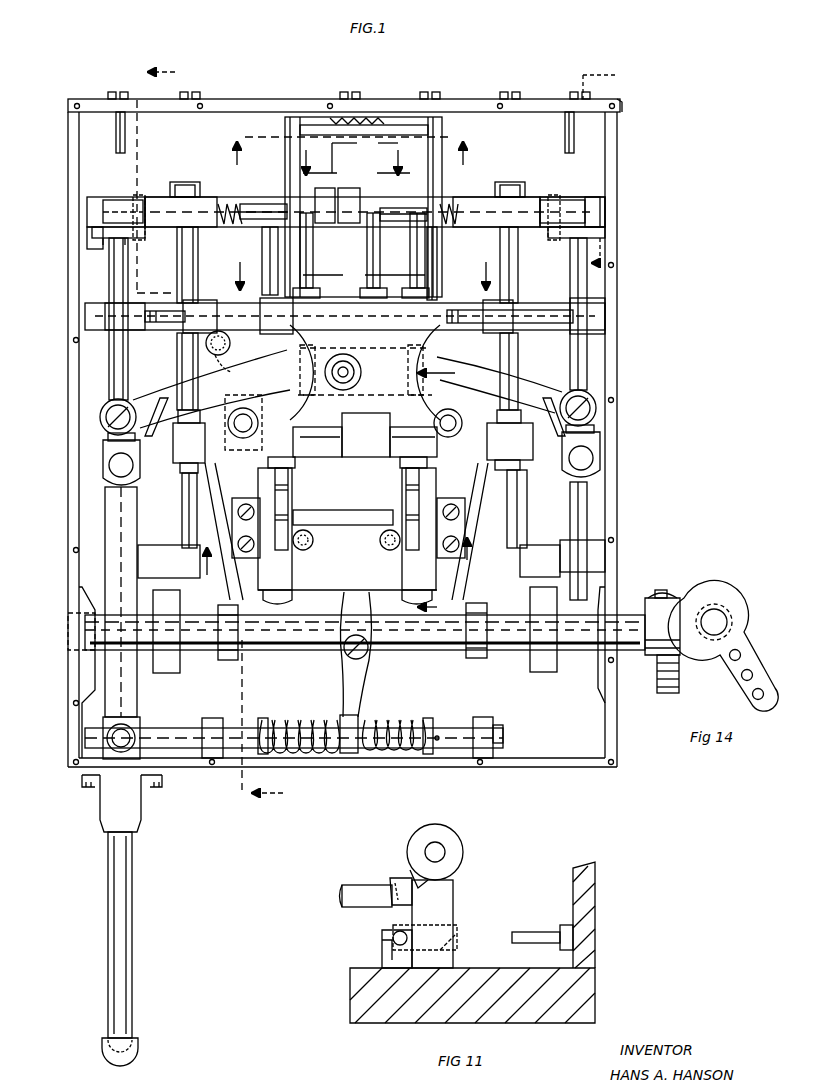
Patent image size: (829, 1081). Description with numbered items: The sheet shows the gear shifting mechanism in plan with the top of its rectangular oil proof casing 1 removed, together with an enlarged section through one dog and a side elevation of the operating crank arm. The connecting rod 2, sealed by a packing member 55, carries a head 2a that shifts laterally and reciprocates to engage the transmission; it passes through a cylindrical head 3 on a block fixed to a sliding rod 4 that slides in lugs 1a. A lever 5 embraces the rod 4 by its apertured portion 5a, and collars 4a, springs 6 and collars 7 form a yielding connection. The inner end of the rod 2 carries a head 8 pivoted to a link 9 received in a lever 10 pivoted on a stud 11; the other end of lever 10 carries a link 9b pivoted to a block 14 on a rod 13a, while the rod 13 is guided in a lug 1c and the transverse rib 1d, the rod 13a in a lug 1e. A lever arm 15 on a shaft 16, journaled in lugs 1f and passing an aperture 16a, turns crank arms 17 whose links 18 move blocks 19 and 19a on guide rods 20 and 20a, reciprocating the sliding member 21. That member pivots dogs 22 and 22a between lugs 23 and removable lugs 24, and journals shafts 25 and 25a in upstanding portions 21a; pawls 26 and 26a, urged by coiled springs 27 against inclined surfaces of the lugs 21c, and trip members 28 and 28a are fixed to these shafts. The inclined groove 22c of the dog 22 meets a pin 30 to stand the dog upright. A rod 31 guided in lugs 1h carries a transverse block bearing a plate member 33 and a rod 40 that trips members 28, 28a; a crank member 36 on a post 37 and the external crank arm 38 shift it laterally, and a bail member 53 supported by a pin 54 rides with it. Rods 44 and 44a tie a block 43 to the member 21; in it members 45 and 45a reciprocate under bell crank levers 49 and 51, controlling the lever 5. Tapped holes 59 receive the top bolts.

In FIG. 1, the casing 1 is at (620, 276).
In FIG. 1, the lugs 1a is at (212, 720).
In FIG. 1, the lug 1c is at (144, 560).
In FIG. 1, the transverse rib 1d is at (88, 325).
In FIG. 1, the lug 1e is at (540, 550).
In FIG. 1, the lugs 1f is at (168, 668).
In FIG. 1, the lugs 1h is at (205, 310).
In FIG. 1, the connecting rod 2 is at (122, 960).
In FIG. 1, the head 2a is at (140, 1055).
In FIG. 1, the cylindrical head 3 is at (136, 728).
In FIG. 1, the sliding rod 4 is at (168, 735).
In FIG. 1, the collars 4a is at (345, 722).
In FIG. 1, the lever 5 is at (347, 690).
In FIG. 1, the upstanding apertured portion 5a is at (350, 755).
In FIG. 1, the springs 6 is at (420, 724).
In FIG. 1, the collars 7 is at (263, 720).
In FIG. 1, the head 8 is at (112, 505).
In FIG. 1, the link 9 is at (108, 436).
In FIG. 1, the link 9b is at (585, 432).
In FIG. 1, the lever 10 is at (355, 349).
In FIG. 1, the shouldered stud 11 is at (358, 432).
In FIG. 1, the rod 13 is at (110, 350).
In FIG. 1, the rod 13a is at (580, 520).
In FIG. 1, the block 14 is at (598, 443).
In FIG. 1, the lever arm 15 is at (660, 680).
In FIG. 1, the shaft 16 is at (641, 605).
In FIG. 1, the aperture 16a is at (85, 632).
In FIG. 1, the crank arms 17 is at (240, 656).
In FIG. 1, the links 18 is at (214, 494).
In FIG. 1, the block 19 is at (533, 442).
In FIG. 1, the block 19a is at (176, 447).
In FIG. 1, the guide rod 20 is at (527, 485).
In FIG. 1, the guide rod 20a is at (182, 488).
In FIG. 1, the sliding member 21 is at (240, 197).
In FIG. 1, the upstanding portions 21a is at (158, 197).
In FIG. 1, the lugs 21c is at (605, 205).
In FIG. 1, the dog 22 is at (112, 240).
In FIG. 11, the dog 22 is at (400, 912).
In FIG. 1, the dog 22a is at (605, 232).
In FIG. 11, the inclined groove 22c is at (390, 884).
In FIG. 1, the lugs 23 is at (95, 242).
In FIG. 11, the lugs 23 is at (392, 945).
In FIG. 1, the removable lugs 24 is at (143, 235).
In FIG. 1, the shaft 25 is at (255, 204).
In FIG. 1, the shaft 25a is at (388, 208).
In FIG. 1, the pawl member 26 is at (117, 200).
In FIG. 11, the pawl member 26 is at (455, 847).
In FIG. 1, the pawl member 26a is at (545, 200).
In FIG. 1, the coiled springs 27 is at (226, 202).
In FIG. 1, the trip member 28 is at (316, 201).
In FIG. 1, the trip member 28a is at (348, 197).
In FIG. 1, the pin 30 is at (125, 146).
In FIG. 11, the pin 30 is at (520, 930).
In FIG. 1, the rod 31 is at (545, 324).
In FIG. 1, the plate member 33 is at (455, 412).
In FIG. 1, the crank member 36 is at (228, 351).
In FIG. 1, the post 37 is at (243, 438).
In FIG. 1, the crank arm 38 is at (215, 368).
In FIG. 1, the rod 40 is at (313, 240).
In FIG. 1, the block 43 is at (322, 588).
In FIG. 1, the rod 44 is at (264, 250).
In FIG. 1, the rod 44a is at (437, 248).
In FIG. 1, the member 45 is at (306, 549).
In FIG. 1, the member 45a is at (388, 550).
In FIG. 1, the bell crank levers 49 is at (288, 490).
In FIG. 1, the bell crank lever 51 is at (322, 512).
In FIG. 1, the bail member 53 is at (425, 125).
In FIG. 1, the pin 54 is at (355, 120).
In FIG. 1, the packing member 55 is at (142, 803).
In FIG. 1, the tapped holes 59 is at (622, 102).